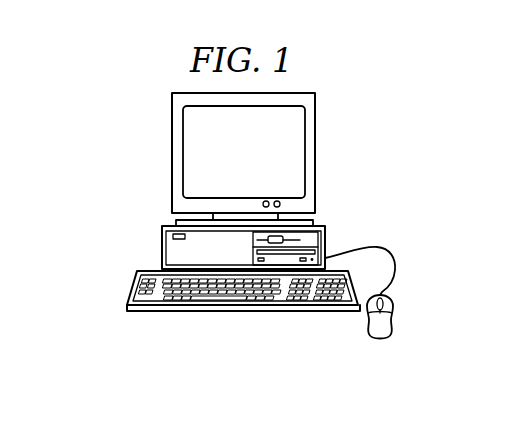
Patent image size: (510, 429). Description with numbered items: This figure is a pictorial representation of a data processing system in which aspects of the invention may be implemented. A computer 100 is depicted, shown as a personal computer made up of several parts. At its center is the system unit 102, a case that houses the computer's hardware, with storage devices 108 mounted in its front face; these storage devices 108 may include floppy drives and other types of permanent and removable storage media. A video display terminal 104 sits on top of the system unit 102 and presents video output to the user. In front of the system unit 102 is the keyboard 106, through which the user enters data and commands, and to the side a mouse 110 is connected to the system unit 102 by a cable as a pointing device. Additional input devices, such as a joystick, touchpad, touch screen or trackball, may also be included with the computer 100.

The computer 100 is at (108, 140).
The system unit 102 is at (162, 243).
The video display terminal 104 is at (316, 155).
The keyboard 106 is at (155, 311).
The storage devices 108 is at (300, 240).
The mouse 110 is at (380, 340).